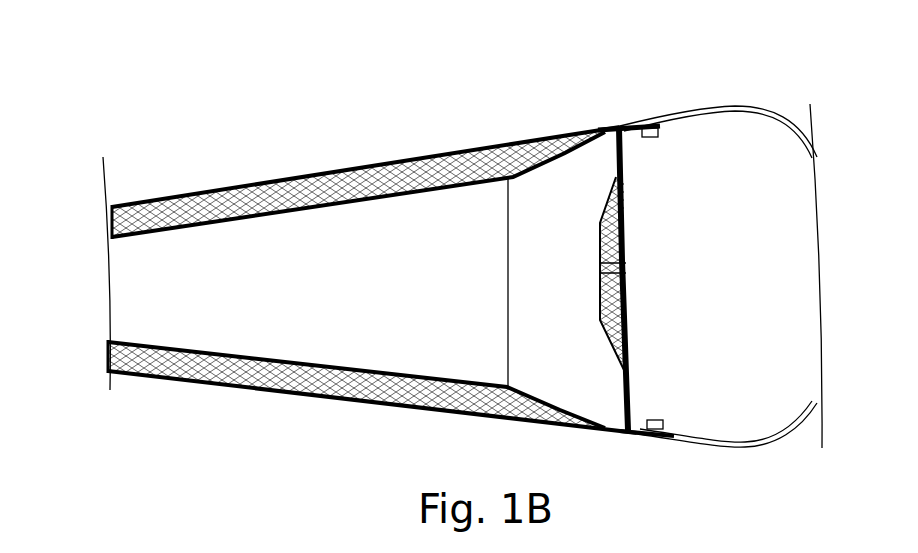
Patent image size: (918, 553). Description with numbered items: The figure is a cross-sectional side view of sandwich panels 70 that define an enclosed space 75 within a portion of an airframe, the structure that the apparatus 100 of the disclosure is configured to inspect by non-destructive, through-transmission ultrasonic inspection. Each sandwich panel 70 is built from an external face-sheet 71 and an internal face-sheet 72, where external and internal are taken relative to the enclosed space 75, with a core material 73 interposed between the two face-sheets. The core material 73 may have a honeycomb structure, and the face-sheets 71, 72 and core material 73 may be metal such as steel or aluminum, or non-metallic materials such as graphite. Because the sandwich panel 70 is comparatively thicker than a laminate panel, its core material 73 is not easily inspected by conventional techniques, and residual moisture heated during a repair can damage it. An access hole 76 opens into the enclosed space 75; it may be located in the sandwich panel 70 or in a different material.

The apparatus 100 is at (128, 74).
The sandwich panel 70 is at (469, 138).
The external face-sheet 71 is at (277, 179).
The internal face-sheet 72 is at (188, 228).
The core material 73 is at (412, 172).
The enclosed space 75 is at (428, 288).
The access hole 76 is at (626, 268).